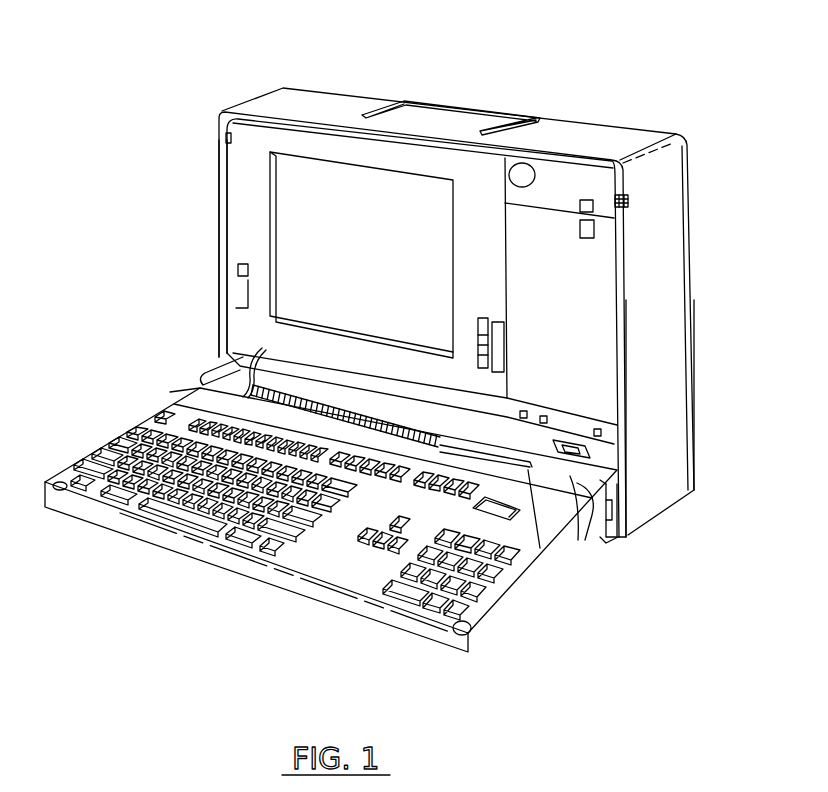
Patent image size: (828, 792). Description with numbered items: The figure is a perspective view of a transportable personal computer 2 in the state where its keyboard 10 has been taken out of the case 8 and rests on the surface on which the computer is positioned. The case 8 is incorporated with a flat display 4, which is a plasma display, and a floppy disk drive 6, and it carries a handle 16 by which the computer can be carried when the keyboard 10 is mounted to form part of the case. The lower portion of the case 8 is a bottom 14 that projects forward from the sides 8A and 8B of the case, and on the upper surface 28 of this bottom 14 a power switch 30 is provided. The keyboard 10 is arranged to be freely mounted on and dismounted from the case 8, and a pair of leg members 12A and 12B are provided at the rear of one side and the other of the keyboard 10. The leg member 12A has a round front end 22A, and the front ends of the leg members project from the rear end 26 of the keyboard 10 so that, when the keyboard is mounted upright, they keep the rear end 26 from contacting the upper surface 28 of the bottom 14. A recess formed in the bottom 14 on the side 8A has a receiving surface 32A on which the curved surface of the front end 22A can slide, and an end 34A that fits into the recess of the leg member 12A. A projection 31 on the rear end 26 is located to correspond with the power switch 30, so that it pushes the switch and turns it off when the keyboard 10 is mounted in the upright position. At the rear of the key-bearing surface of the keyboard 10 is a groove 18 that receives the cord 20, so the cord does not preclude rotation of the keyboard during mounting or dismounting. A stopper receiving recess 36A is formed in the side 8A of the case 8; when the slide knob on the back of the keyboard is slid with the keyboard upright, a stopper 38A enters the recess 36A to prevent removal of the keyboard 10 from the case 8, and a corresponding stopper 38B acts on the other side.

The transportable personal computer 2 is at (348, 85).
The flat display 4 is at (362, 254).
The floppy disk drive 6 is at (552, 227).
The case 8 is at (637, 150).
The side of the case 8A is at (658, 303).
The side of the case 8B is at (220, 194).
The keyboard 10 is at (402, 625).
The leg member 12A is at (598, 543).
The leg member 12B is at (180, 377).
The bottom 14 is at (618, 532).
The handle 16 is at (474, 100).
The groove 18 is at (540, 547).
The cord 20 is at (227, 373).
The round front end 22A is at (613, 481).
The rear end of the keyboard 26 is at (577, 540).
The upper surface of the bottom 28 is at (343, 388).
The power switch 30 is at (565, 450).
The projection 31 is at (570, 468).
The receiving surface 32A is at (603, 480).
The end 34A is at (607, 543).
The stopper receiving recess 36A is at (227, 138).
The stopper 38A is at (471, 640).
The left foot 38B is at (52, 480).